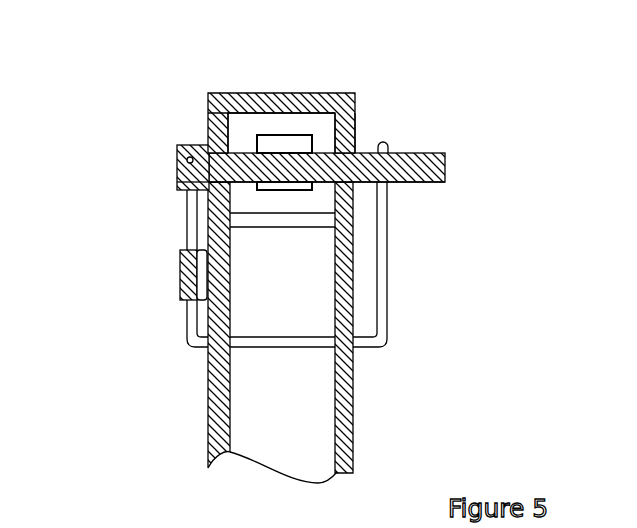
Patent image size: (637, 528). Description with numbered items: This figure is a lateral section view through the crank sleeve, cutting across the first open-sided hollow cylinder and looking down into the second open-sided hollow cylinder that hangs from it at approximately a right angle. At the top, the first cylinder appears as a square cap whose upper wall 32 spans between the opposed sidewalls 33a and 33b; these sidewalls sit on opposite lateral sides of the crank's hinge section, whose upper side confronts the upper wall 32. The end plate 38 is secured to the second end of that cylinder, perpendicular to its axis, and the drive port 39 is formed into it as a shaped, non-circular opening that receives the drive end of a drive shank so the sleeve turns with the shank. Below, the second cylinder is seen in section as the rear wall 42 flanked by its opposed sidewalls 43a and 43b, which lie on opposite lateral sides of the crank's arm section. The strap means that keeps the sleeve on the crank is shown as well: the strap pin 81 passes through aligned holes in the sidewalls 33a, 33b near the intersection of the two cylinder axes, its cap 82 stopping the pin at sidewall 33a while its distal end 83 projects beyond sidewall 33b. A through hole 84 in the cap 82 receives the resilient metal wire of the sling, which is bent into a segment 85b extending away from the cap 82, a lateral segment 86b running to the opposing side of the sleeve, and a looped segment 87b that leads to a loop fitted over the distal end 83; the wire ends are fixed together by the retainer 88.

The upper wall 32 is at (269, 85).
The end plate 38 is at (243, 133).
The drive port 39 is at (297, 140).
The sidewall 33a is at (210, 125).
The sidewall 33b is at (338, 143).
The strap pin 81 is at (312, 165).
The cap 82 is at (134, 169).
The distal end 83 is at (427, 183).
The through hole 84 is at (178, 180).
The segment 85b is at (187, 223).
The lateral segment 86b is at (263, 348).
The looped segment 87b is at (388, 267).
The retainer 88 is at (182, 290).
The rear wall 42 is at (273, 332).
The sidewall 43a is at (225, 417).
The sidewall 43b is at (352, 414).